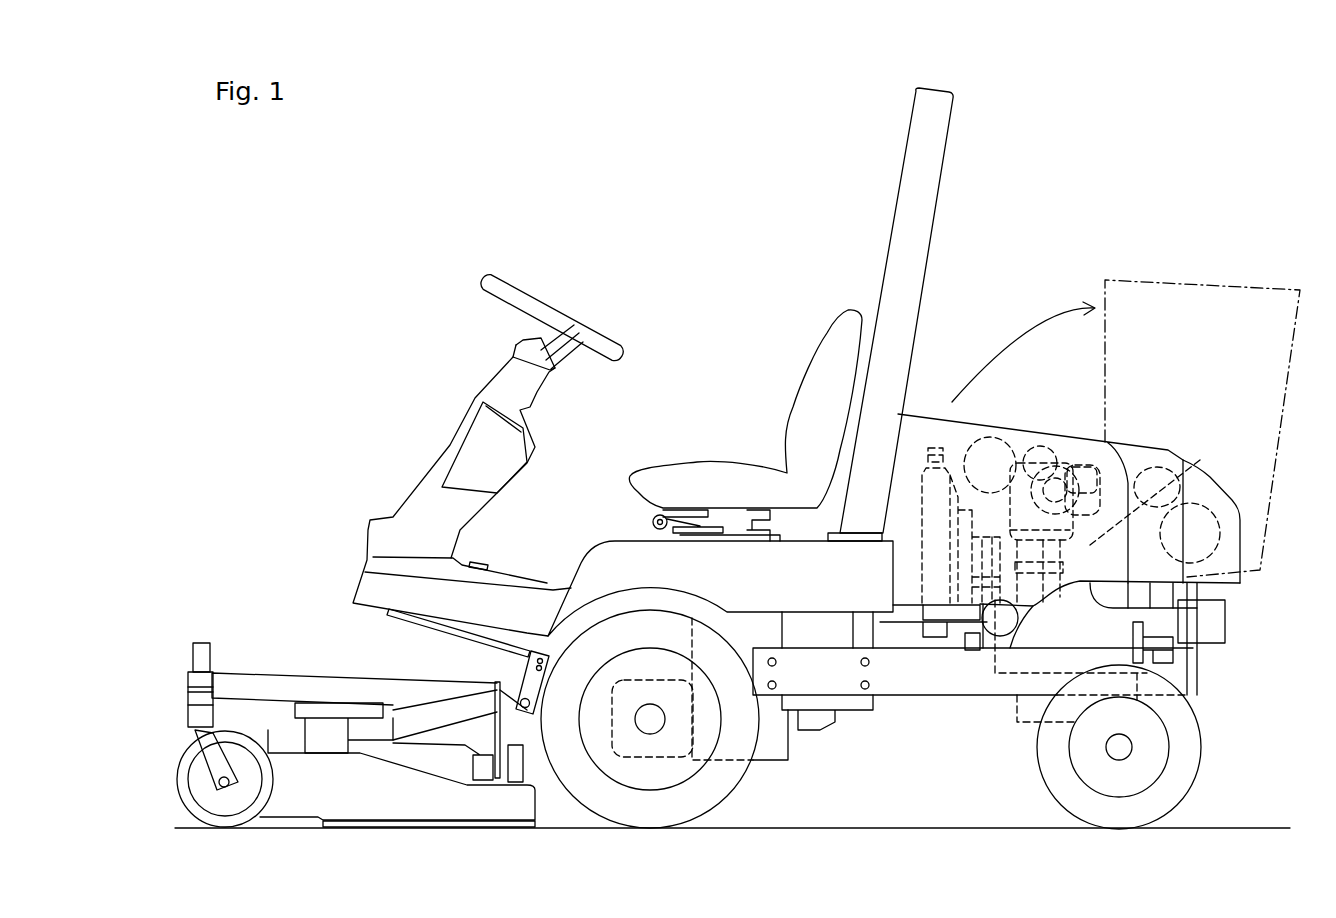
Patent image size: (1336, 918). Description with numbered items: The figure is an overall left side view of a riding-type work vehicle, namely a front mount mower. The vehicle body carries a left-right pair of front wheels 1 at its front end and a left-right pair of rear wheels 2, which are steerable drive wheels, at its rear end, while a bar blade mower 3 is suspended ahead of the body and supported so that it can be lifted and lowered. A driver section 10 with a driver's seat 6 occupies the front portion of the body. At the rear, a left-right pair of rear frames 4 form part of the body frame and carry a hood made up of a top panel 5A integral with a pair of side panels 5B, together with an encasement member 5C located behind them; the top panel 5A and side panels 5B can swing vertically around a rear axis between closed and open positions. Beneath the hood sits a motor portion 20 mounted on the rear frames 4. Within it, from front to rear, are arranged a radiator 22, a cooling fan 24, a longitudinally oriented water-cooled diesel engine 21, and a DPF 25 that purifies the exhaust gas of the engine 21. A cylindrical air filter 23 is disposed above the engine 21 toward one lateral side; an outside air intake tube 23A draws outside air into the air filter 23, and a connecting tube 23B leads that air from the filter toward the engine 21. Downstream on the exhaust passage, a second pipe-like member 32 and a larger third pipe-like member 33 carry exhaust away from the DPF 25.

The front wheels 1 is at (724, 787).
The rear wheels 2 is at (1183, 770).
The bar blade mower 3 is at (265, 660).
The rear frames 4 is at (905, 685).
The top panel 5A is at (1133, 441).
The side panels 5B is at (895, 553).
The encasement member 5C is at (1200, 468).
The driver's seat 6 is at (707, 466).
The driver section 10 is at (695, 314).
The motor portion 20 is at (1036, 420).
The engine 21 is at (1070, 640).
The radiator 22 is at (935, 448).
The air filter 23 is at (1000, 437).
The outside air intake tube 23A is at (1080, 448).
The connecting tube 23B is at (1022, 620).
The cooling fan 24 is at (968, 648).
The DPF 25 is at (1232, 492).
The second pipe-like member 32 is at (1163, 652).
The third pipe-like member 33 is at (1225, 624).